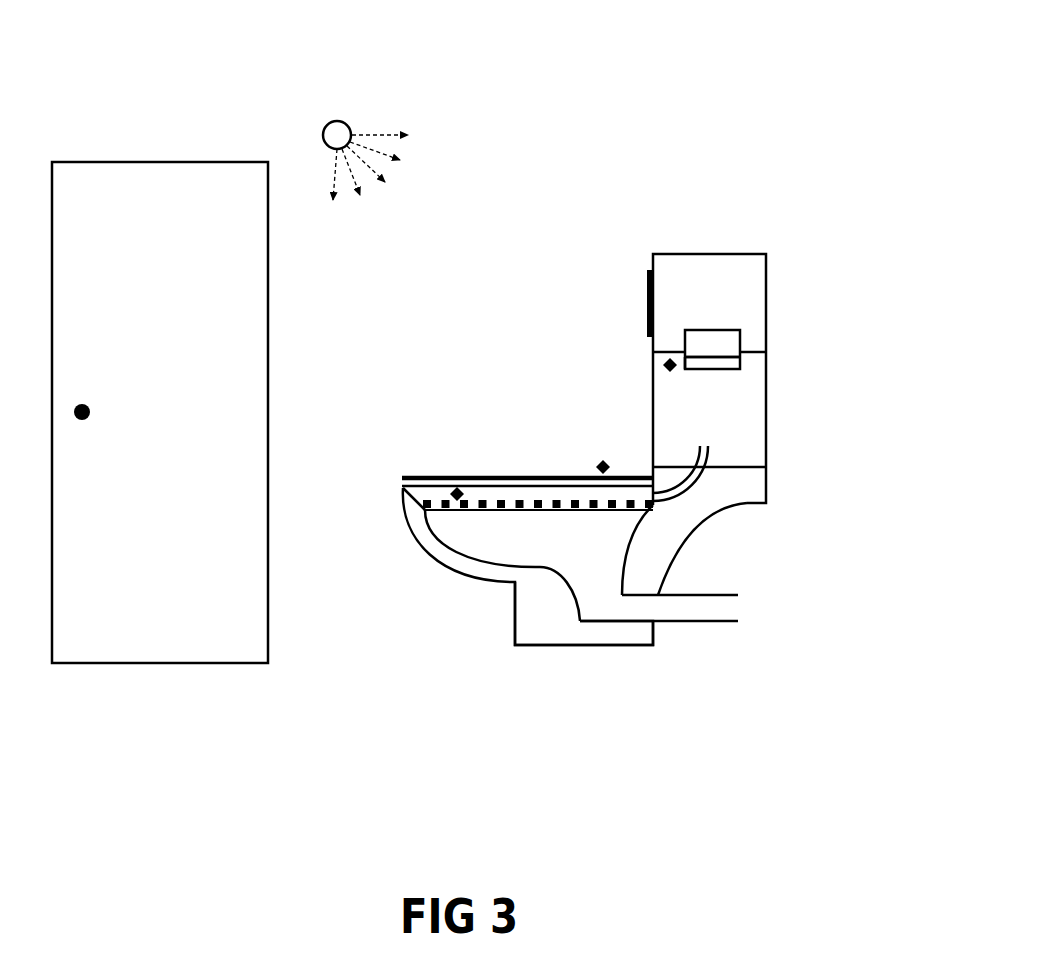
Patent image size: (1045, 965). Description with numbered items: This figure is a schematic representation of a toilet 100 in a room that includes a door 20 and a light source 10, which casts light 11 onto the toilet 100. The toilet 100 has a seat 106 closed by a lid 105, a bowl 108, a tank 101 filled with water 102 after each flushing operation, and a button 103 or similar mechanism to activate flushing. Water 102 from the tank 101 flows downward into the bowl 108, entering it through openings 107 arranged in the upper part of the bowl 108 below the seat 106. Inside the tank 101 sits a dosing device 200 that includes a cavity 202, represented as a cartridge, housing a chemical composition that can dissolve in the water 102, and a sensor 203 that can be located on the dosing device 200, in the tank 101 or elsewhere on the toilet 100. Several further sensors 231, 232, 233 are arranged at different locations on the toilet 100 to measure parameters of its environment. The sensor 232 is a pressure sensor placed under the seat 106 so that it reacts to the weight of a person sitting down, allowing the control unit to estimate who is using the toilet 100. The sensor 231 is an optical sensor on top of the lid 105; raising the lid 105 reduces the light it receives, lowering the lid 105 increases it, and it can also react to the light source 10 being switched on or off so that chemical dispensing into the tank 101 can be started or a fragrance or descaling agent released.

The light source 10 is at (339, 128).
The light 11 is at (397, 127).
The door 20 is at (225, 338).
The toilet 100 is at (571, 431).
The tank 101 is at (677, 289).
The water 102 is at (697, 421).
The button 103 is at (648, 303).
The lid 105 is at (510, 477).
The seat 106 is at (410, 492).
The openings 107 is at (645, 514).
The bowl 108 is at (540, 542).
The dosing device 200 is at (743, 310).
The cavity 202 is at (708, 340).
The sensor 203 is at (692, 362).
The sensor 231 is at (600, 463).
The sensor 232 is at (455, 490).
The sensor 233 is at (665, 362).